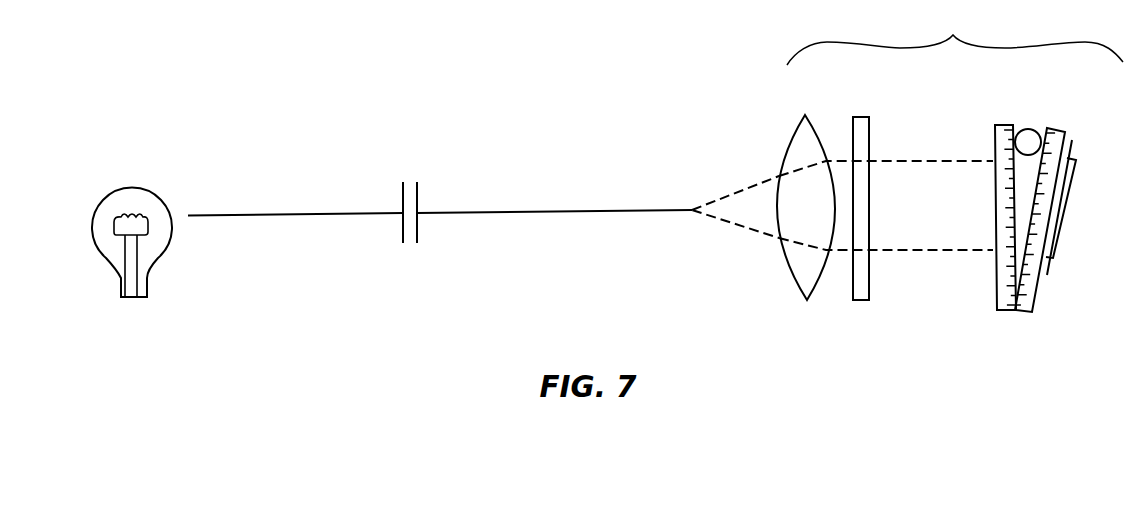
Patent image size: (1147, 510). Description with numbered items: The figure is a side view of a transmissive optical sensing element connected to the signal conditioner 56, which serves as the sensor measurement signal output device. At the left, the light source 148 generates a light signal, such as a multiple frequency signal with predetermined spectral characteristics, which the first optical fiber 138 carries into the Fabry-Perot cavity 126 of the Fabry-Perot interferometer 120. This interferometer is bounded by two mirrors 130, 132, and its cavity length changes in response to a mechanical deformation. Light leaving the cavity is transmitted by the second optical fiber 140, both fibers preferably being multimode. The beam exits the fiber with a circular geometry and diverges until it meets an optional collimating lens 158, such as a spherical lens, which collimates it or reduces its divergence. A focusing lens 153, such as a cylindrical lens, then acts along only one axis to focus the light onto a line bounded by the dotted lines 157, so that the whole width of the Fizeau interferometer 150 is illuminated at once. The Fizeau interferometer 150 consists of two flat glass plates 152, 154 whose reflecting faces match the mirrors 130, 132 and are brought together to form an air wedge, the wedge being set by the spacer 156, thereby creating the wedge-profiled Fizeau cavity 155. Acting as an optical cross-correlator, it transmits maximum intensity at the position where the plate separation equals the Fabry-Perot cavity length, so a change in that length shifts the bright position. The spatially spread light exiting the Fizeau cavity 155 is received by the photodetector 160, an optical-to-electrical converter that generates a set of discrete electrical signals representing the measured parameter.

The signal conditioner 56 is at (907, 198).
The Fabry-Perot interferometer 120 is at (412, 172).
The Fabry-Perot cavity 126 is at (408, 240).
The mirror 130 is at (400, 232).
The mirror 132 is at (417, 228).
The first optical fiber 138 is at (273, 215).
The second optical fiber 140 is at (578, 210).
The light source 148 is at (140, 200).
The Fizeau interferometer 150 is at (1015, 310).
The flat glass plate 152 is at (1007, 127).
The focusing lens 153 is at (862, 142).
The flat glass plate 154 is at (1062, 137).
The Fizeau cavity 155 is at (1007, 195).
The spacer 156 is at (1028, 140).
The dotted lines 157 is at (917, 248).
The collimating lens 158 is at (807, 148).
The photodetector 160 is at (1052, 268).